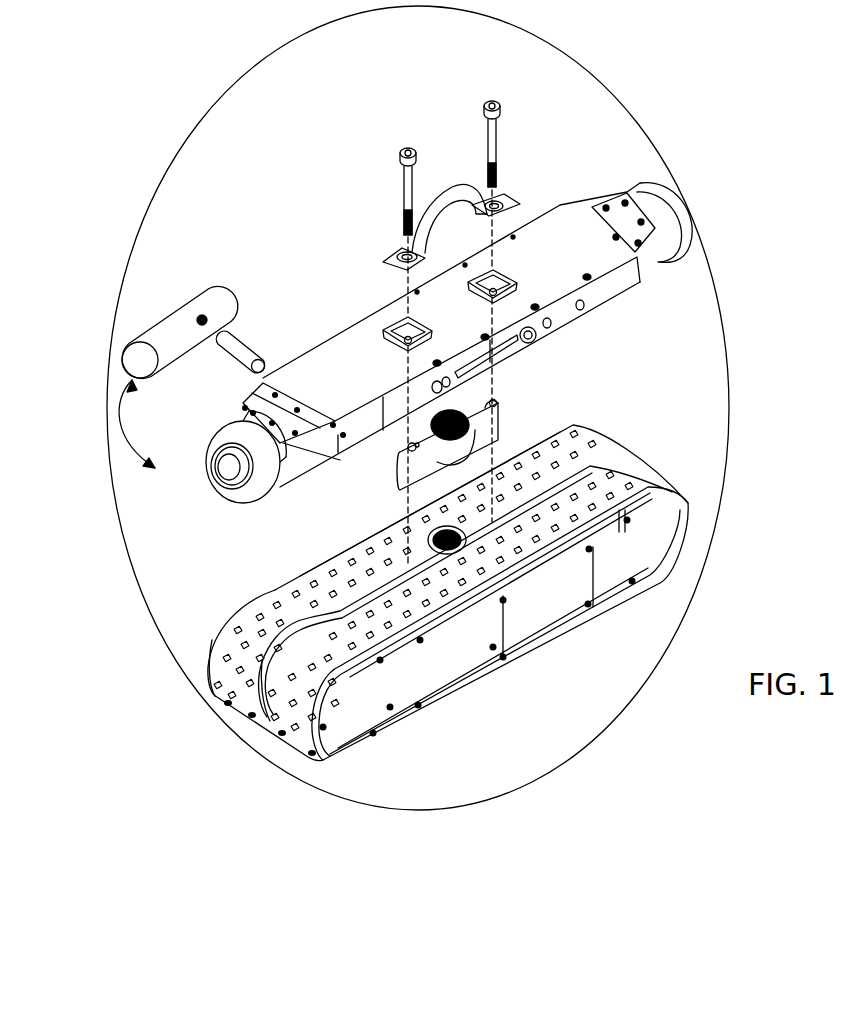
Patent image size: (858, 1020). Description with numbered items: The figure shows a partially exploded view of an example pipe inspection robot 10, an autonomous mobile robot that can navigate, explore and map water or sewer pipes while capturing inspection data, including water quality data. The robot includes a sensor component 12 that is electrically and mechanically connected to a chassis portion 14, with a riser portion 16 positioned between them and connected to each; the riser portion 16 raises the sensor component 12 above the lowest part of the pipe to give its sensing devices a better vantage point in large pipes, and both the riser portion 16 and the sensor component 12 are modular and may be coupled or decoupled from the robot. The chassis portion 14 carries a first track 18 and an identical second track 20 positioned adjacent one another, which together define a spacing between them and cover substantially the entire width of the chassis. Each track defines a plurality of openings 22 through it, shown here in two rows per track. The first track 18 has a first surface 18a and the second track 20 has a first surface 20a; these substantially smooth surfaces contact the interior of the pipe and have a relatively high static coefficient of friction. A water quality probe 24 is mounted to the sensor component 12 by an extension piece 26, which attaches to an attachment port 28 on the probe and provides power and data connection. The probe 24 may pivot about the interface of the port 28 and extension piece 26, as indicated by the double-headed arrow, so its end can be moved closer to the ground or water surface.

The pipe inspection robot 10 is at (162, 184).
The sensor component 12 is at (338, 372).
The chassis portion 14 is at (353, 707).
The riser portion 16 is at (487, 432).
The first track 18 is at (650, 470).
The first surface 18a is at (297, 678).
The second track 20 is at (607, 440).
The first surface 20a is at (242, 650).
The openings 22 is at (307, 582).
The water quality probe 24 is at (163, 327).
The extension piece 26 is at (232, 348).
The attachment port 28 is at (202, 320).